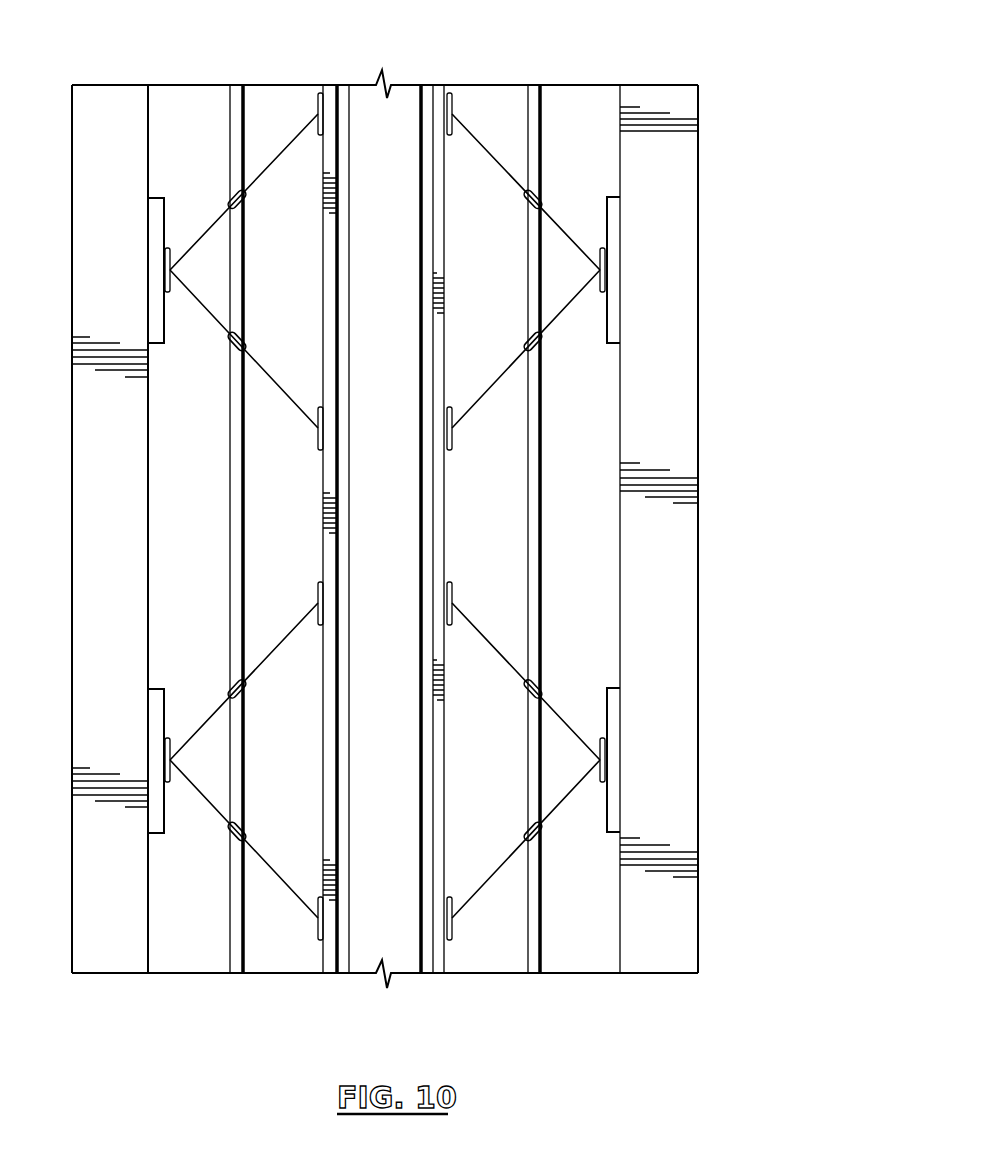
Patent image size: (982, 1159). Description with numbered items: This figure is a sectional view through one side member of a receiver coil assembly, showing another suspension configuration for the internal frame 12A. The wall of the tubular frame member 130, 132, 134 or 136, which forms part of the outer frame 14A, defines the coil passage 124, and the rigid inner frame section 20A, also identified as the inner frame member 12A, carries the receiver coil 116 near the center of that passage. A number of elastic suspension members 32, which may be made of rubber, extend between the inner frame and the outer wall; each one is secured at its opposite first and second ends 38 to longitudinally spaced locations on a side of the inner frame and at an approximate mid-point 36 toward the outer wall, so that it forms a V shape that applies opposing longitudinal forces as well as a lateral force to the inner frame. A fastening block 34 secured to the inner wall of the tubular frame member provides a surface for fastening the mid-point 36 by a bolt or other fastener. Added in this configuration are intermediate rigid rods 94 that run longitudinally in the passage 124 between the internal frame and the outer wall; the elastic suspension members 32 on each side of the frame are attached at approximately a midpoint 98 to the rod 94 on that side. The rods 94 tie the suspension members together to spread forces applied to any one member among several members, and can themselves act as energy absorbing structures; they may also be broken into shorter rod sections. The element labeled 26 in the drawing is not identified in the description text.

The stud 26 is at (213, 97).
The intermediate rigid rods 94 is at (236, 95).
The receiver coil 116 is at (404, 208).
The coil passage 124 is at (212, 510).
The inner frame section 20A is at (323, 778).
The inner frame member 12A is at (440, 958).
The outer frame 14A is at (605, 667).
The fastening block 34 is at (165, 329).
The mid-point 36 is at (172, 271).
The first and second ends 38 is at (452, 433).
The elastic suspension member 32 is at (278, 395).
The midpoint 98 is at (247, 197).
The tubular frame member 130 is at (685, 436).
The tubular frame member 132 is at (659, 483).
The tubular frame member 134 is at (659, 857).
The tubular frame member 136 is at (110, 572).